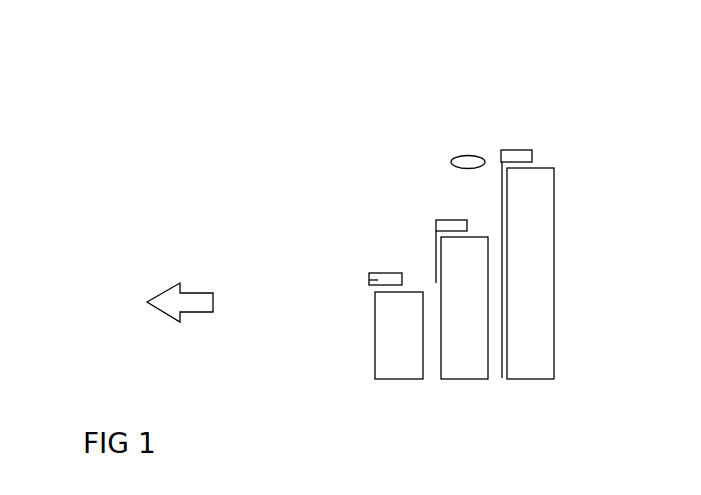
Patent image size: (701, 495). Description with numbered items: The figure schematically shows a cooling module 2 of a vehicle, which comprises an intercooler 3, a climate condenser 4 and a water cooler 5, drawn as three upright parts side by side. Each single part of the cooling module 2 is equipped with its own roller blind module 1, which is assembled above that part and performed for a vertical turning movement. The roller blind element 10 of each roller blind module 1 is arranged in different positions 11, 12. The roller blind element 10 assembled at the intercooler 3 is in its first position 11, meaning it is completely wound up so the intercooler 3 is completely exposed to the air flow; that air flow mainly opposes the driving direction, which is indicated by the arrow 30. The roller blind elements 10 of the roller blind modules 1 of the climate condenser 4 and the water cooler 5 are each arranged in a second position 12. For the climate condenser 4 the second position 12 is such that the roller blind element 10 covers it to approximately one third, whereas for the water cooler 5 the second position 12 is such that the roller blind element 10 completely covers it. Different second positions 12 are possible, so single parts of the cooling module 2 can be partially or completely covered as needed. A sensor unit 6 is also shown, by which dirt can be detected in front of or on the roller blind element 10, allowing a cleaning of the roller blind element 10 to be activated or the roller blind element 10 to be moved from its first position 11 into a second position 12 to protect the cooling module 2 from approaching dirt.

The roller blind module 1 is at (368, 278).
The cooling module 2 is at (451, 309).
The intercooler 3 is at (401, 364).
The climate condenser 4 is at (465, 364).
The water cooler 5 is at (533, 364).
The sensor unit 6 is at (468, 160).
The roller blind element 10 is at (379, 270).
The first position 11 is at (368, 285).
The second position 12 is at (502, 210).
The arrow 30 is at (200, 302).